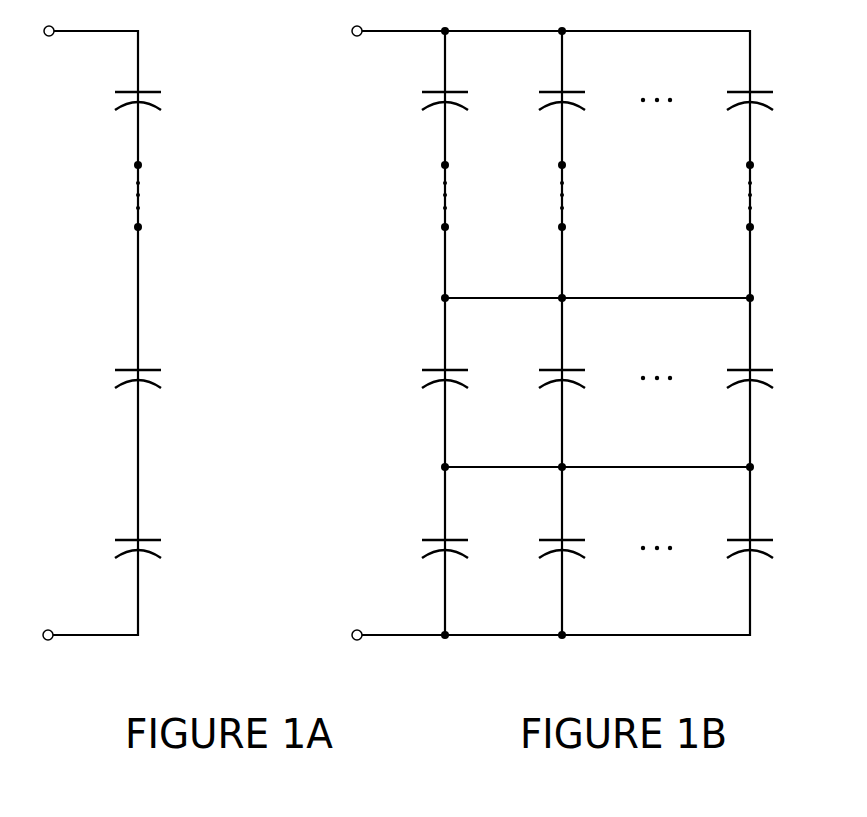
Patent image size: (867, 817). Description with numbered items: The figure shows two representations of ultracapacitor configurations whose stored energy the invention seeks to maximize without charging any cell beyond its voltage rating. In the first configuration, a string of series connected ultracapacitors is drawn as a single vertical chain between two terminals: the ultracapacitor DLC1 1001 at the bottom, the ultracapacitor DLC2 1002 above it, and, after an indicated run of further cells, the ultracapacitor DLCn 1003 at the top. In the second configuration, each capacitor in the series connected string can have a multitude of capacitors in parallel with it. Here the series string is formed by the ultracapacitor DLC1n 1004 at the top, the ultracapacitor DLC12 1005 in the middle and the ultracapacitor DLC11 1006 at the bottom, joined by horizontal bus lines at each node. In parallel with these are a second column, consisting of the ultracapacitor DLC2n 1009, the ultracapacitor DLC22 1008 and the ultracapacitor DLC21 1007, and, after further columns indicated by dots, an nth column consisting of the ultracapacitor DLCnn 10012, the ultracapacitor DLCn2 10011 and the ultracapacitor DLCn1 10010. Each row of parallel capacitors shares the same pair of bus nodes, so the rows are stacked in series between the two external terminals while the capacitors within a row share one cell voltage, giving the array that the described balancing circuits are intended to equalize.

In FIG. 1A, the ultracapacitor DLC1 1001 is at (130, 532).
In FIG. 1A, the ultracapacitor DLC2 1002 is at (130, 362).
In FIG. 1A, the ultracapacitor DLCn 1003 is at (128, 83).
In FIG. 1B, the ultracapacitor DLC1n 1004 is at (440, 83).
In FIG. 1B, the ultracapacitor DLC12 1005 is at (440, 362).
In FIG. 1B, the ultracapacitor DLC11 1006 is at (440, 532).
In FIG. 1B, the ultracapacitor DLC21 1007 is at (553, 532).
In FIG. 1B, the ultracapacitor DLC22 1008 is at (553, 362).
In FIG. 1B, the ultracapacitor DLC2n 1009 is at (553, 83).
In FIG. 1B, the ultracapacitor DLCn1 10010 is at (742, 532).
In FIG. 1B, the ultracapacitor DLCn2 10011 is at (742, 362).
In FIG. 1B, the ultracapacitor DLCnn 10012 is at (742, 83).